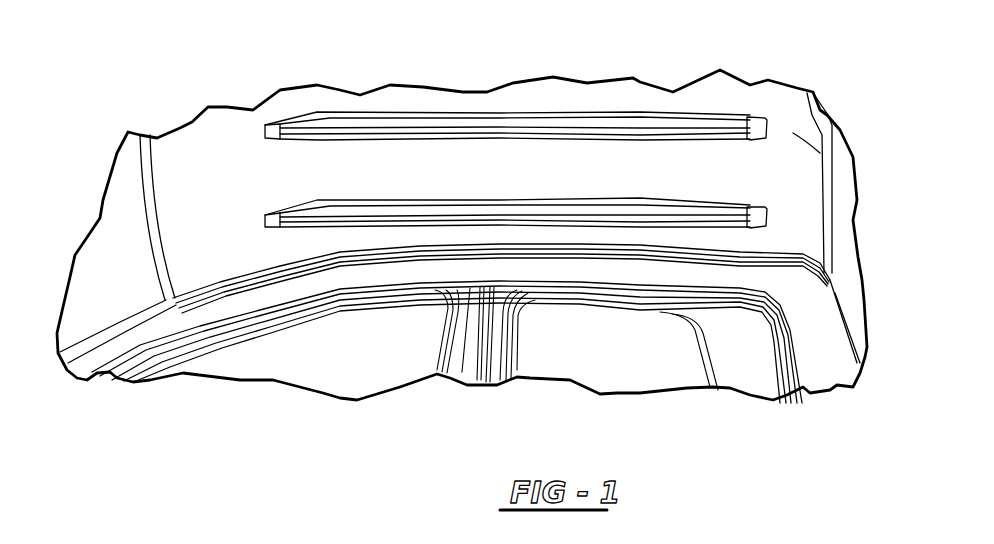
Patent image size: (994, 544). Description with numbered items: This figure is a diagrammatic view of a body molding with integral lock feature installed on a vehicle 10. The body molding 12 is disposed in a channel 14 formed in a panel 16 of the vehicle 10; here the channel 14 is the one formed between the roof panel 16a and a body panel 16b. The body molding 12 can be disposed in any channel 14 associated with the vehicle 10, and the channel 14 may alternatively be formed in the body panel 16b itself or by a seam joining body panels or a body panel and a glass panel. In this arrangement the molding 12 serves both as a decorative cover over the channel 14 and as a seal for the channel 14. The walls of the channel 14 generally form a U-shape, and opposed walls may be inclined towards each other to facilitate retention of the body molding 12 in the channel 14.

The vehicle 10 is at (614, 52).
The body molding 12 is at (790, 250).
The channel 14 is at (210, 273).
The panel 16 is at (99, 191).
The roof panel 16a is at (200, 153).
The body panel 16b is at (170, 315).